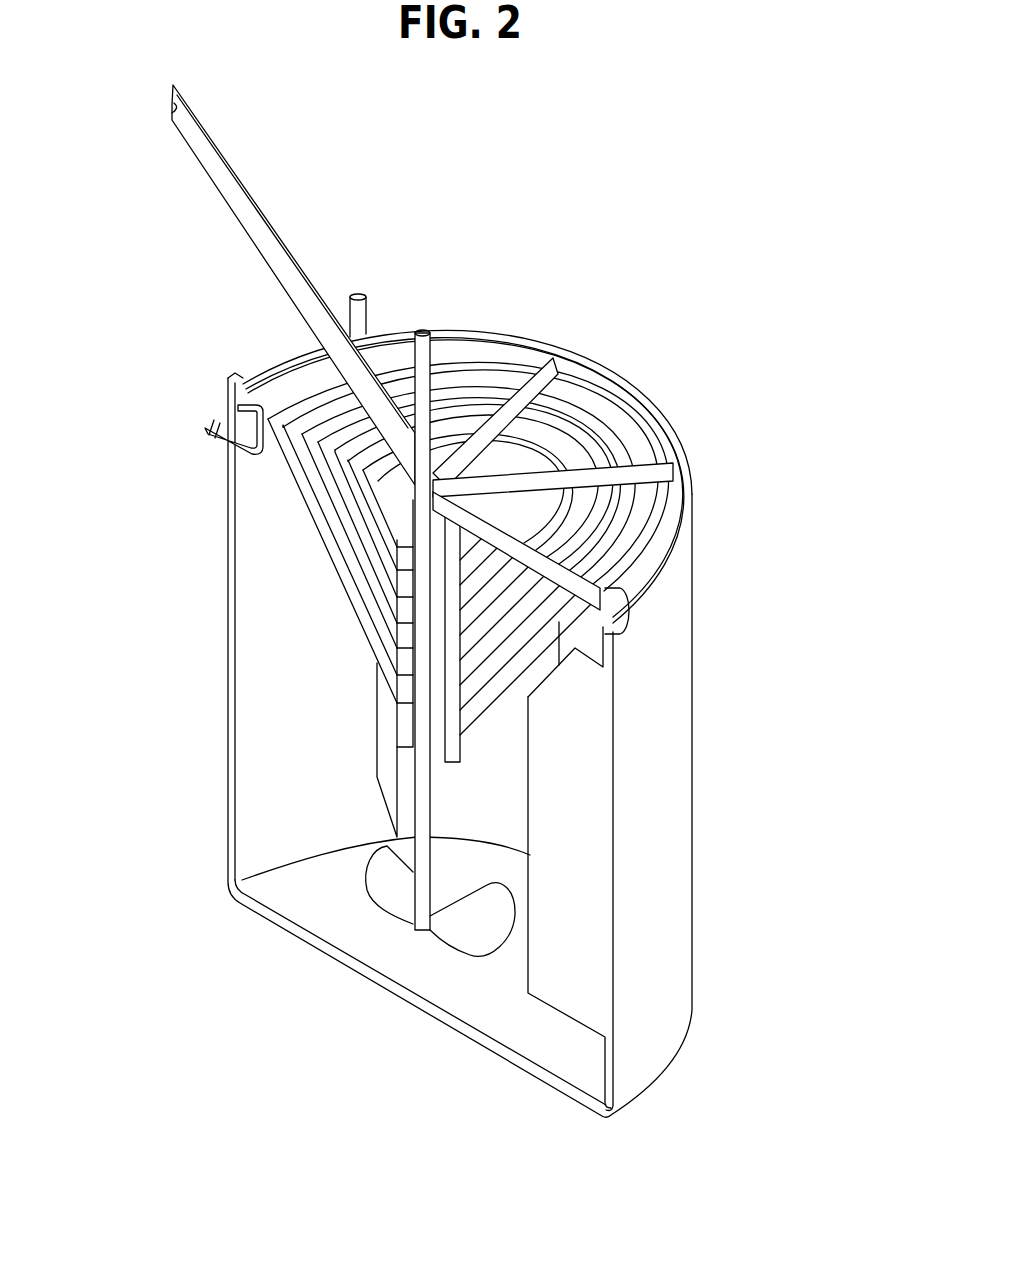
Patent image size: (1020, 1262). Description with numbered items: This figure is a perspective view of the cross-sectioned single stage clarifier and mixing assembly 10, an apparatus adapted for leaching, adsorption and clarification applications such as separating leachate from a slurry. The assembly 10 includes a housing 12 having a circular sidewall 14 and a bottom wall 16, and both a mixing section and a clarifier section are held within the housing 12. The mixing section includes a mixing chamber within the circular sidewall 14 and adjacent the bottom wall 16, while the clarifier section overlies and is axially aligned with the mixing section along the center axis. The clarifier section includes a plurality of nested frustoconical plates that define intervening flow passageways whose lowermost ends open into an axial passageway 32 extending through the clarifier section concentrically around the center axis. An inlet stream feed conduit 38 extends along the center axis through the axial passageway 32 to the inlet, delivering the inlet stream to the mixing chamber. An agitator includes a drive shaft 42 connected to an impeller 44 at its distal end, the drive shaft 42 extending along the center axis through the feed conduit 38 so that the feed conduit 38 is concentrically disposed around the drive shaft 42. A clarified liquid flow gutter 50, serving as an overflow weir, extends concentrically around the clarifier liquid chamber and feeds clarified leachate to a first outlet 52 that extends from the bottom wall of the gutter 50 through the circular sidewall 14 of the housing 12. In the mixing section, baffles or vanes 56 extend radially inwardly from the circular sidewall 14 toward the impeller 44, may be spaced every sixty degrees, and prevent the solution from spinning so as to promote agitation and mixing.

The single stage clarifier and mixing assembly 10 is at (579, 229).
The housing 12 is at (438, 708).
The circular sidewall 14 is at (688, 775).
The bottom wall 16 is at (383, 963).
The axial passageway 32 is at (440, 755).
The inlet stream feed conduit 38 is at (250, 195).
The drive shaft 42 is at (424, 330).
The impeller 44 is at (460, 933).
The clarified liquid flow gutter 50 is at (252, 390).
The first outlet 52 is at (205, 428).
The baffles or vanes 56 is at (565, 848).